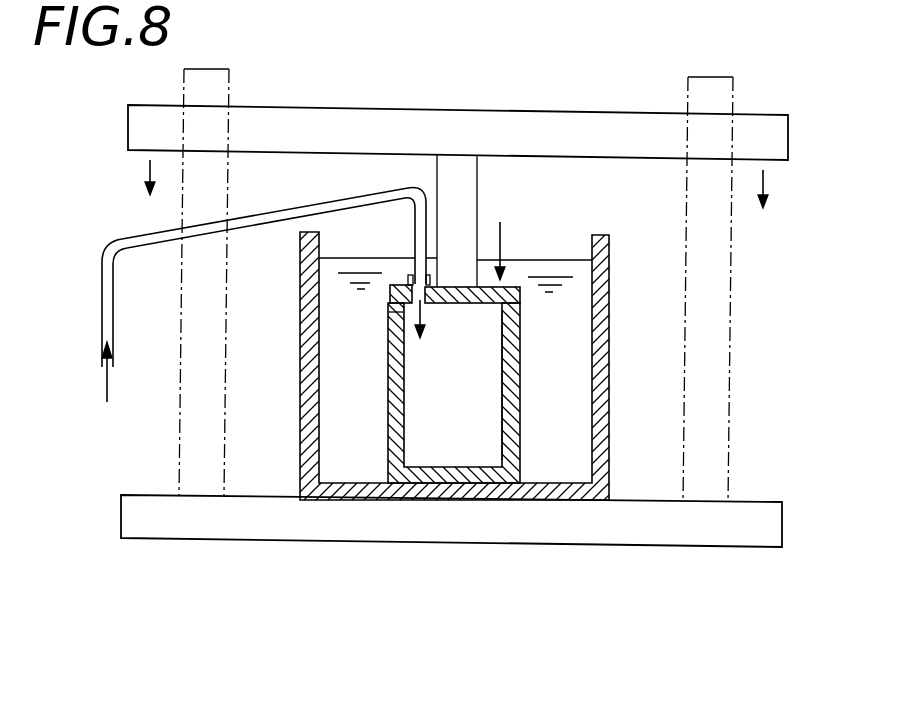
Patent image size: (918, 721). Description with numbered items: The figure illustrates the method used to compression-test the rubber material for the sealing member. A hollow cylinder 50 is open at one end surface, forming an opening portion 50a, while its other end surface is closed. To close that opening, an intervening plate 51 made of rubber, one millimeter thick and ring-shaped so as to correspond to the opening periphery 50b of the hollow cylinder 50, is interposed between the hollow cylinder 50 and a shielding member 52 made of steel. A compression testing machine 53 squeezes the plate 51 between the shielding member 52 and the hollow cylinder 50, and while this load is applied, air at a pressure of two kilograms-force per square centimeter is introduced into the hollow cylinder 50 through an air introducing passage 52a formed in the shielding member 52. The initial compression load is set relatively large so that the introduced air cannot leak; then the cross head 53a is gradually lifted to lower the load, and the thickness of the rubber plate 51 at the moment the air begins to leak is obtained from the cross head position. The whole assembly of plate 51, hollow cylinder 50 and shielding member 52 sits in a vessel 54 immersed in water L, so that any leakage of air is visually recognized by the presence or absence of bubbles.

The hollow cylinder 50 is at (517, 410).
The opening portion 50a is at (503, 322).
The opening periphery 50b is at (390, 310).
The intervening plate 51 is at (395, 305).
The shielding member 52 is at (512, 284).
The air introducing passage 52a is at (430, 190).
The compression testing machine 53 is at (763, 76).
The cross head 53a is at (585, 128).
The outer container 54 is at (609, 308).
The water L is at (573, 458).